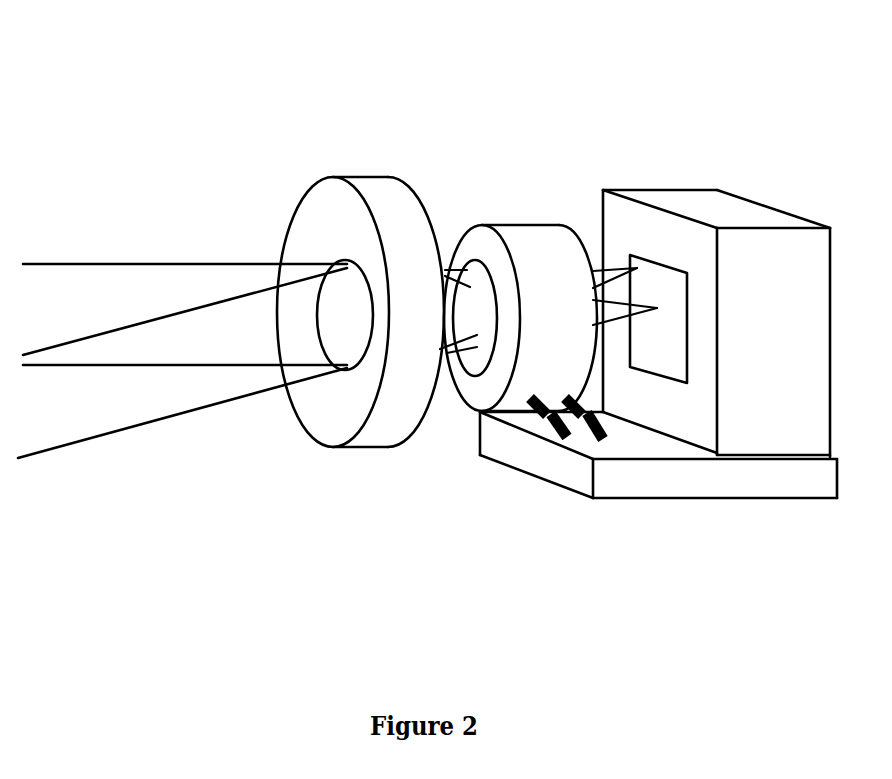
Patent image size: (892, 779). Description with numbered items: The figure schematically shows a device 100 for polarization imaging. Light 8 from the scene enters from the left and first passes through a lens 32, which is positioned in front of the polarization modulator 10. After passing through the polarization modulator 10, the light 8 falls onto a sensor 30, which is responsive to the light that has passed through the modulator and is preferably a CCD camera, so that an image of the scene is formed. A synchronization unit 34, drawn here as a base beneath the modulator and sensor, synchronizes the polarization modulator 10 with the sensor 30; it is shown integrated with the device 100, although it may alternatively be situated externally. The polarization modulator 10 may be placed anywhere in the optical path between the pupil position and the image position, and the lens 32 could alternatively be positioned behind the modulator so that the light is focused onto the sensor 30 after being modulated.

The device for polarization imaging 100 is at (152, 48).
The light from the scene 8 is at (140, 422).
The lens 32 is at (378, 182).
The polarization modulator 10 is at (518, 238).
The sensor 30 is at (738, 200).
The synchronization unit 34 is at (748, 483).